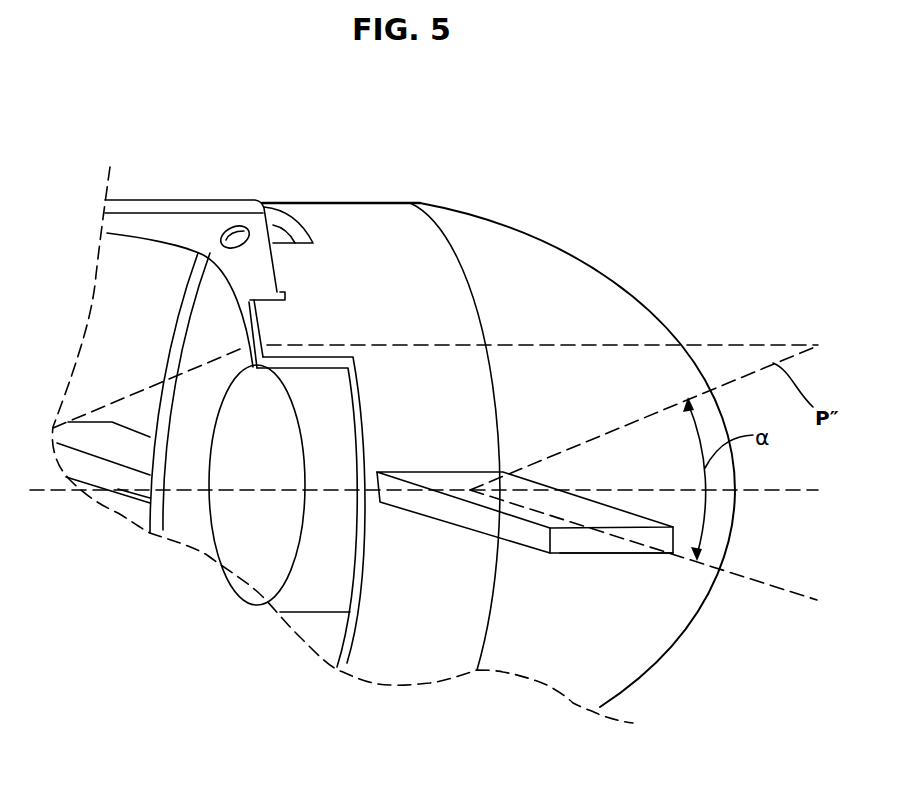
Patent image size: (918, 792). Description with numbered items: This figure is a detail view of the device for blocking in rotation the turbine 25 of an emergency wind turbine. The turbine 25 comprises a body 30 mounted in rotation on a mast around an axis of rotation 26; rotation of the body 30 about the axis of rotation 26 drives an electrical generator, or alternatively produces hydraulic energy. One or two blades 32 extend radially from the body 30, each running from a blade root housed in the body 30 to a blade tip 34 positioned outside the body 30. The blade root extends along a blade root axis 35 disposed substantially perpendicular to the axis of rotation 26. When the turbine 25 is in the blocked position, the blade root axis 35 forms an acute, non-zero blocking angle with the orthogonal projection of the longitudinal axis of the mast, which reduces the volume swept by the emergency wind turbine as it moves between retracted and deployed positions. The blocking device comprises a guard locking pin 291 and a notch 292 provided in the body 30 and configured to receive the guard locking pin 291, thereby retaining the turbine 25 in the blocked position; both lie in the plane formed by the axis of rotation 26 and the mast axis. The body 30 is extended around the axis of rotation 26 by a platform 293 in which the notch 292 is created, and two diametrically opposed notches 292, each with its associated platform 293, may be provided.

The turbine 25 is at (505, 182).
The axis of rotation 26 is at (800, 493).
The body 30 is at (563, 300).
The blade 32 is at (557, 503).
The blade tip 34 is at (593, 542).
The blade root axis 35 is at (770, 588).
The guard locking pin 291 is at (196, 194).
The notch 292 is at (292, 283).
The platform 293 is at (280, 328).